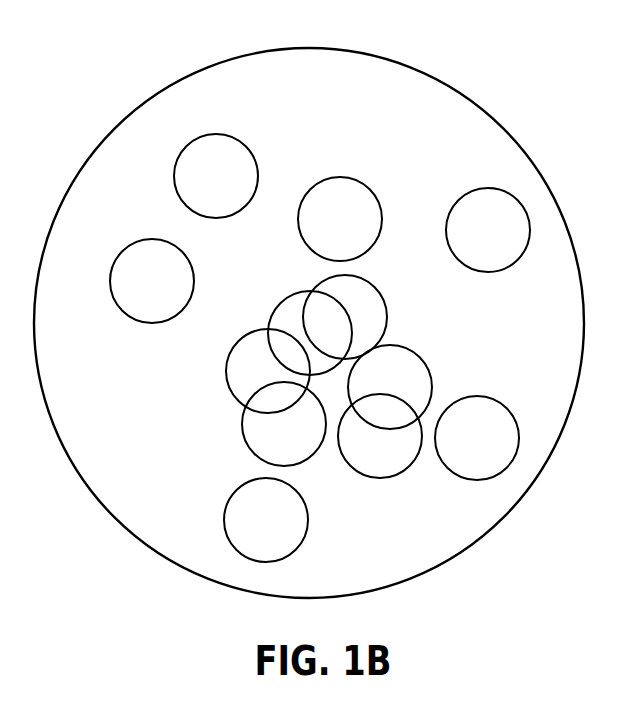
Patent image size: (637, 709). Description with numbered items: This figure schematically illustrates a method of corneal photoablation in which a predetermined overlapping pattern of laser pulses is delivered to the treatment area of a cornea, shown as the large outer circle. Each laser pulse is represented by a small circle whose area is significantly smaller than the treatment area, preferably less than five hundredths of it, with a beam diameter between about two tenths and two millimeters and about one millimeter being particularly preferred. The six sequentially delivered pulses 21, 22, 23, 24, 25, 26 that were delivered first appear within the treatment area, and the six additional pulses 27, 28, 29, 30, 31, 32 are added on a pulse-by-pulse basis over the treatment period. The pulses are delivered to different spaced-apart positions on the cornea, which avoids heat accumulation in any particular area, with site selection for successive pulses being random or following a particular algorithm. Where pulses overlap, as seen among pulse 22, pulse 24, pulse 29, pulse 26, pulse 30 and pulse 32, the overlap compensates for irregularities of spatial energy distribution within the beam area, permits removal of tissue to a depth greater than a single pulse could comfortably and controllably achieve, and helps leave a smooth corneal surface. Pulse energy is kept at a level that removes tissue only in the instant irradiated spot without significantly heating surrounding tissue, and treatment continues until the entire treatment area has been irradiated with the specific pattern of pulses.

The sequentially delivered pulse 21 is at (134, 294).
The sequentially delivered pulse 22 is at (356, 313).
The sequentially delivered pulse 23 is at (458, 449).
The sequentially delivered pulse 24 is at (294, 323).
The sequentially delivered pulse 25 is at (320, 233).
The sequentially delivered pulse 26 is at (269, 456).
The additional pulse 27 is at (248, 532).
The additional pulse 28 is at (470, 244).
The additional pulse 29 is at (232, 379).
The additional pulse 30 is at (380, 387).
The additional pulse 31 is at (197, 189).
The additional pulse 32 is at (360, 466).